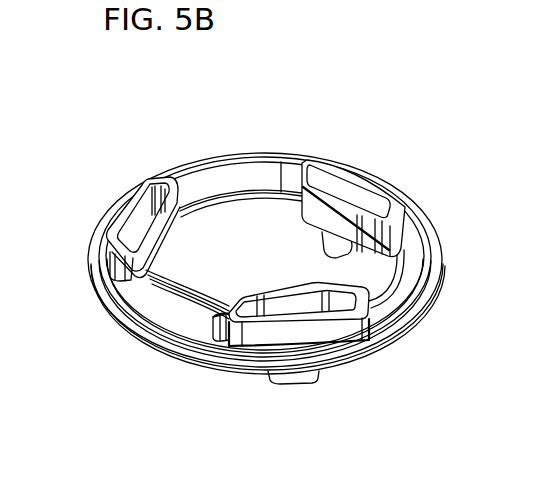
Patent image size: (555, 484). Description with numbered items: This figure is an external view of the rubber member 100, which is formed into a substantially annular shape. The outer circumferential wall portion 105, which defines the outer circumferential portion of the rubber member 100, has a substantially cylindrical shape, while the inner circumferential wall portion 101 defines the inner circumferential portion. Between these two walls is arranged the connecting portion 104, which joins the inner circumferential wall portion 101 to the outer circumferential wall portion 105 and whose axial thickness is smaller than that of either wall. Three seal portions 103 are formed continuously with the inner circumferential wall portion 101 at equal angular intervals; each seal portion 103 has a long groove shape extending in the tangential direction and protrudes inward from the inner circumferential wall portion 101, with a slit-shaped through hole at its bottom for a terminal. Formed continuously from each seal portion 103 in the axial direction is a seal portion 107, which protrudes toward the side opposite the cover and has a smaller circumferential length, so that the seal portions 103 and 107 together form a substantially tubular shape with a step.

The rubber member 100 is at (259, 256).
The inner circumferential wall portion 101 is at (237, 183).
The seal portion 103 is at (141, 200).
The connecting portion 104 is at (142, 310).
The outer circumferential wall portion 105 is at (93, 243).
The seal portion 107 is at (343, 246).